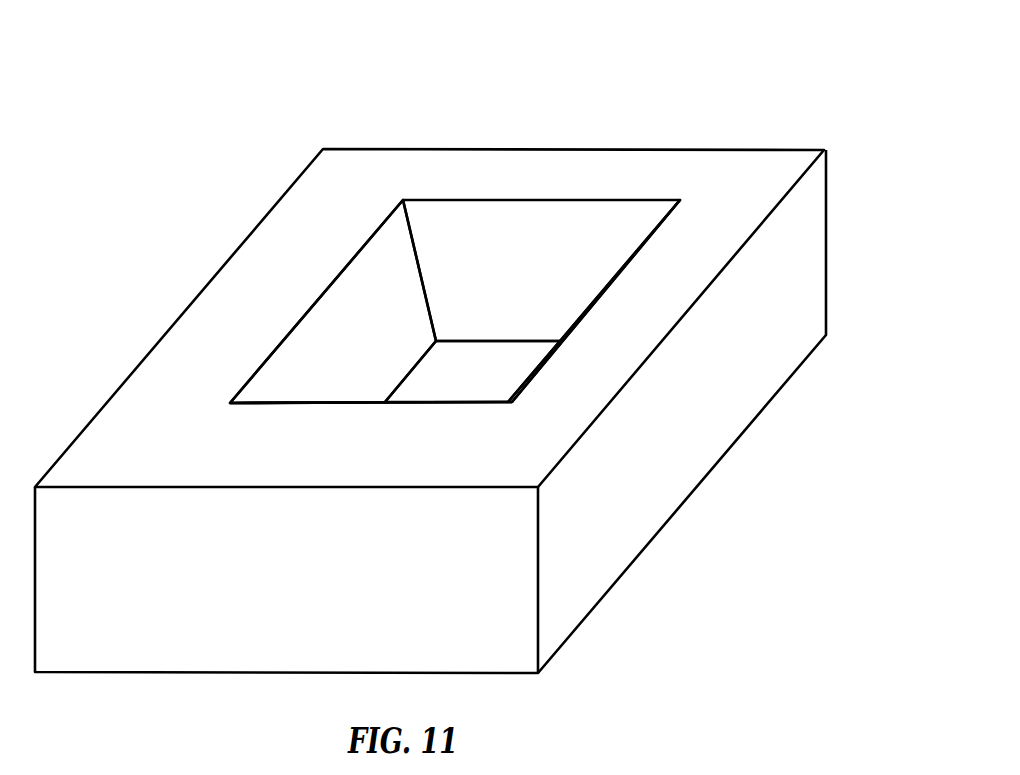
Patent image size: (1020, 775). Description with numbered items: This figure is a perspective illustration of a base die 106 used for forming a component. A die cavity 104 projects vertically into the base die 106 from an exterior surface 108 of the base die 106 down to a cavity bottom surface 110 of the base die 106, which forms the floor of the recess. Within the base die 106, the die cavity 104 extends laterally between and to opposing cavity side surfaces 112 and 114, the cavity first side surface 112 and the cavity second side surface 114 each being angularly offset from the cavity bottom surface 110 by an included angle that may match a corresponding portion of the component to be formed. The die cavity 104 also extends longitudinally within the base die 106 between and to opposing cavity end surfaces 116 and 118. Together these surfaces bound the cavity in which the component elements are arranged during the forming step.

The base die 106 is at (831, 118).
The exterior surface 108 is at (745, 162).
The die cavity 104 is at (520, 236).
The cavity end surface 118 is at (487, 219).
The cavity first side surface 112 is at (325, 327).
The cavity second side surface 114 is at (580, 312).
The cavity bottom surface 110 is at (466, 373).
The cavity end surface 116 is at (310, 403).